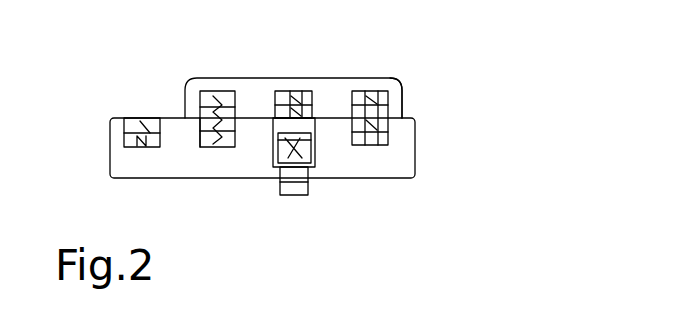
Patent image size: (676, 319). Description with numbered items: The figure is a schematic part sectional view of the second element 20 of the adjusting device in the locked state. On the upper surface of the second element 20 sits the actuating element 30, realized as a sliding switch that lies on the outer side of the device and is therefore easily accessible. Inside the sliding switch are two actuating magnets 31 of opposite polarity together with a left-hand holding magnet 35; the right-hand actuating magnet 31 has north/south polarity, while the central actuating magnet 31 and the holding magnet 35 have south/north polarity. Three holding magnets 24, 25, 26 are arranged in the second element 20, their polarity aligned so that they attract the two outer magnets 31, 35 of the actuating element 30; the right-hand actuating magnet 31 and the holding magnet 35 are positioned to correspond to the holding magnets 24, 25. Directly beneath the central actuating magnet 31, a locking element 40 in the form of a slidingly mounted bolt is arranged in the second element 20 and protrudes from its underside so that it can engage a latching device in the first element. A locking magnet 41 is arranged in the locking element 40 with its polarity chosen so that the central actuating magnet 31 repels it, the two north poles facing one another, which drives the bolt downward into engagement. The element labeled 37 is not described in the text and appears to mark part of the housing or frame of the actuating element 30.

The second element 20 is at (397, 157).
The holding magnet 24 is at (385, 127).
The holding magnet 25 is at (199, 148).
The holding magnet 26 is at (128, 118).
The actuating element 30 is at (262, 82).
The actuating magnet 31 is at (303, 91).
The holding magnet 35 is at (202, 91).
The housing wall 37 is at (392, 100).
The locking element 40 is at (306, 187).
The locking magnet 41 is at (275, 157).